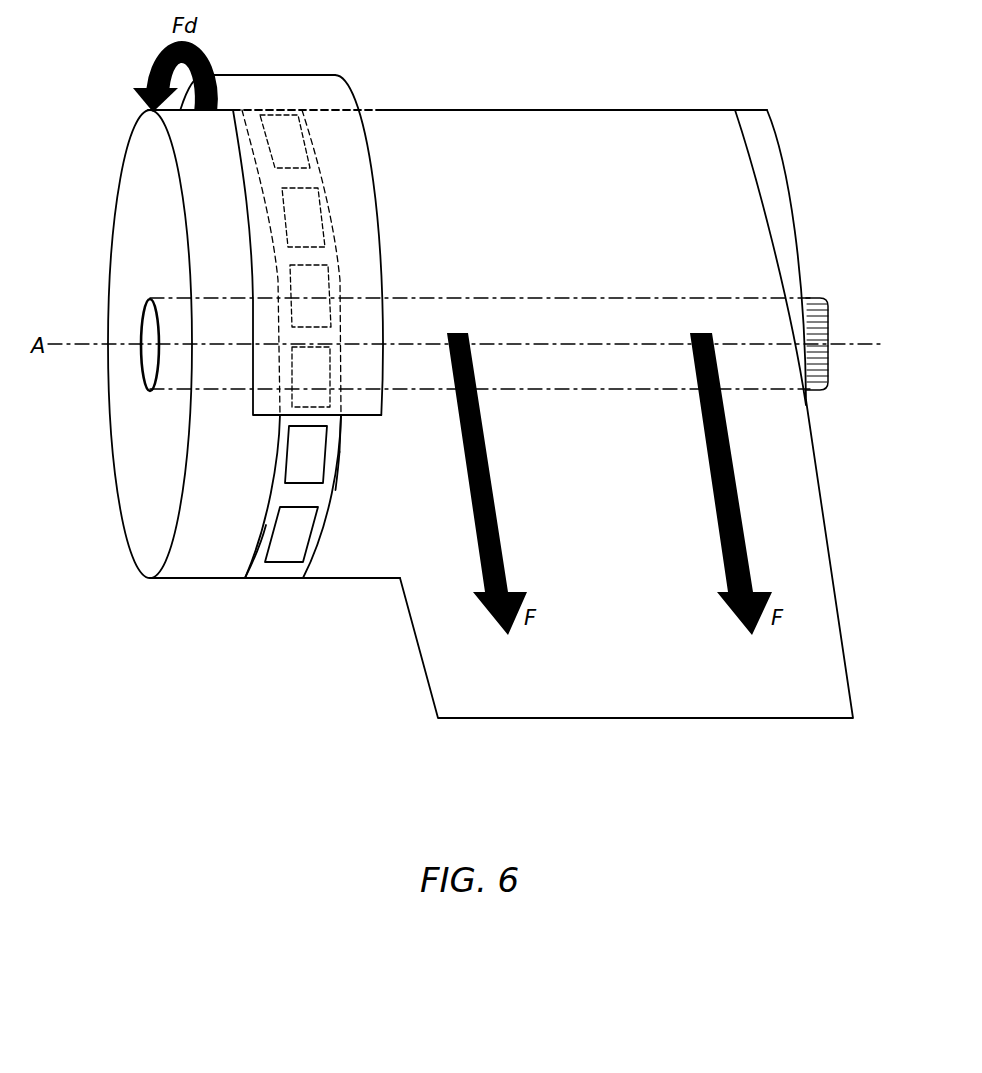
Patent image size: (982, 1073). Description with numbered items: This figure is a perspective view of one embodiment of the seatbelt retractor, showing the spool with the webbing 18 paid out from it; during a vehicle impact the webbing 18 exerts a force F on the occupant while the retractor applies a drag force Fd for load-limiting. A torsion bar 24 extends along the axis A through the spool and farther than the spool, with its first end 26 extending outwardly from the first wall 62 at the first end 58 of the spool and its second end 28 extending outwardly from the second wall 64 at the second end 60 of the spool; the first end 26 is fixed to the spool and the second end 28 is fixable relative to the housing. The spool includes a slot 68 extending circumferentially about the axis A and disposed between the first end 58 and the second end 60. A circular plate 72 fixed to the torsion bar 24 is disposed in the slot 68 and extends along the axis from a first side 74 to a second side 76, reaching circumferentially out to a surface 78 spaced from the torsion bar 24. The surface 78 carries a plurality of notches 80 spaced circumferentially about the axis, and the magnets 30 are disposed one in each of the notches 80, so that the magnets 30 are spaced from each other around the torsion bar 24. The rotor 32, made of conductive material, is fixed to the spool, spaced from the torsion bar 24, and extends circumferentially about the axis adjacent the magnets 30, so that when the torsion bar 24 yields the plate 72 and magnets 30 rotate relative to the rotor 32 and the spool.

The webbing 18 is at (838, 609).
The torsion bar 24 is at (643, 298).
The first end of torsion bar 26 is at (147, 395).
The second end of torsion bar 28 is at (828, 313).
The magnets 30 is at (333, 372).
The rotor 32 is at (355, 96).
The first end of spool 58 is at (108, 199).
The second end of spool 60 is at (797, 166).
The first wall 62 is at (165, 238).
The second wall 64 is at (804, 222).
The slot 68 is at (337, 506).
The plate 72 is at (345, 448).
The first side of plate 74 is at (339, 471).
The second side of plate 76 is at (257, 548).
The surface 78 is at (262, 563).
The notches 80 is at (287, 372).